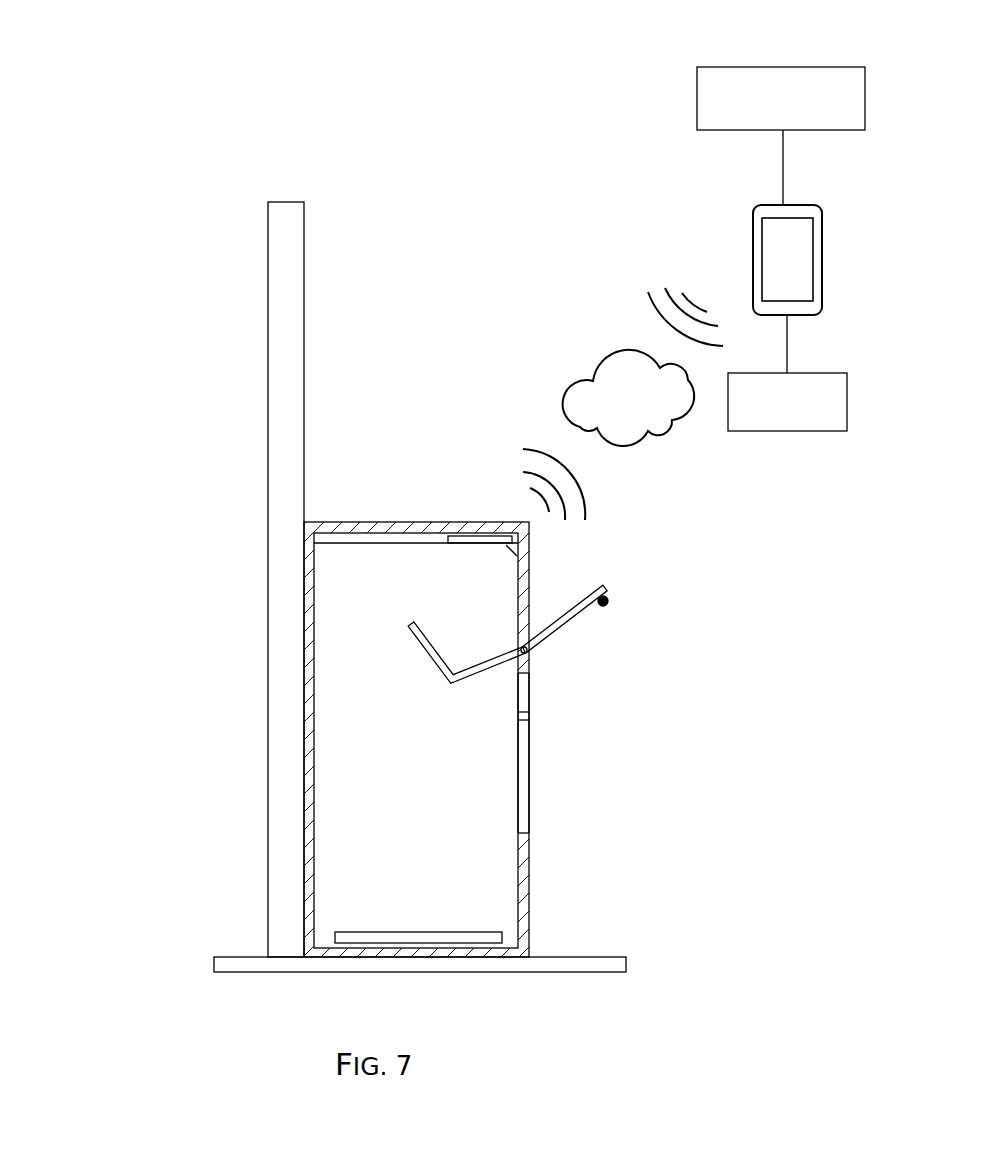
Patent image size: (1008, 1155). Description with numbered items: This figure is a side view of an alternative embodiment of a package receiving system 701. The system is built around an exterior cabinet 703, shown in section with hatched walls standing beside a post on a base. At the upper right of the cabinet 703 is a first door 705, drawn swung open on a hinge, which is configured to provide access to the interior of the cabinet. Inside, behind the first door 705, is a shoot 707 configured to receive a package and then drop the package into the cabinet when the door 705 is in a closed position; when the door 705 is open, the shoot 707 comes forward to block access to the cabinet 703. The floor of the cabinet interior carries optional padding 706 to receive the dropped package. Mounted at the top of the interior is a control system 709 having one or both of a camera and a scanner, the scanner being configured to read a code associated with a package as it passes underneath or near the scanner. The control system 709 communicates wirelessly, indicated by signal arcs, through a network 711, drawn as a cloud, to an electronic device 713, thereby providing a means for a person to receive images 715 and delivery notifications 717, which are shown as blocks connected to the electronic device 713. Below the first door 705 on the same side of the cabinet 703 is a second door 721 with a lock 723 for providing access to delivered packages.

The package receiving system 701 is at (156, 80).
The exterior cabinet 703 is at (529, 903).
The first door 705 is at (567, 623).
The padding 706 is at (405, 932).
The shoot 707 is at (441, 620).
The control system 709 is at (519, 562).
The network 711 is at (590, 366).
The electronic device 713 is at (753, 228).
The images 715 is at (780, 431).
The delivery notifications 717 is at (697, 90).
The second door 721 is at (530, 762).
The lock 723 is at (530, 716).